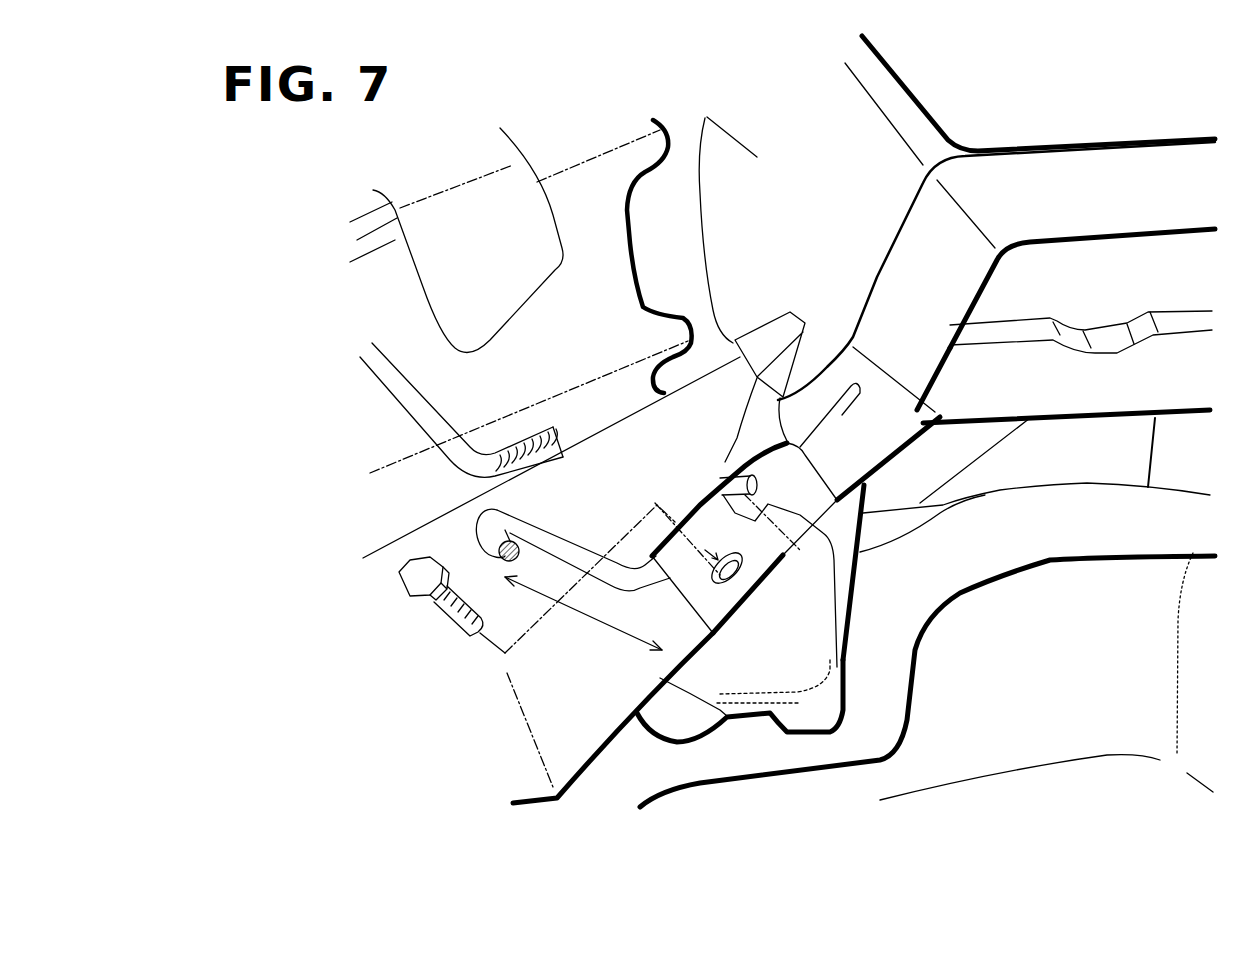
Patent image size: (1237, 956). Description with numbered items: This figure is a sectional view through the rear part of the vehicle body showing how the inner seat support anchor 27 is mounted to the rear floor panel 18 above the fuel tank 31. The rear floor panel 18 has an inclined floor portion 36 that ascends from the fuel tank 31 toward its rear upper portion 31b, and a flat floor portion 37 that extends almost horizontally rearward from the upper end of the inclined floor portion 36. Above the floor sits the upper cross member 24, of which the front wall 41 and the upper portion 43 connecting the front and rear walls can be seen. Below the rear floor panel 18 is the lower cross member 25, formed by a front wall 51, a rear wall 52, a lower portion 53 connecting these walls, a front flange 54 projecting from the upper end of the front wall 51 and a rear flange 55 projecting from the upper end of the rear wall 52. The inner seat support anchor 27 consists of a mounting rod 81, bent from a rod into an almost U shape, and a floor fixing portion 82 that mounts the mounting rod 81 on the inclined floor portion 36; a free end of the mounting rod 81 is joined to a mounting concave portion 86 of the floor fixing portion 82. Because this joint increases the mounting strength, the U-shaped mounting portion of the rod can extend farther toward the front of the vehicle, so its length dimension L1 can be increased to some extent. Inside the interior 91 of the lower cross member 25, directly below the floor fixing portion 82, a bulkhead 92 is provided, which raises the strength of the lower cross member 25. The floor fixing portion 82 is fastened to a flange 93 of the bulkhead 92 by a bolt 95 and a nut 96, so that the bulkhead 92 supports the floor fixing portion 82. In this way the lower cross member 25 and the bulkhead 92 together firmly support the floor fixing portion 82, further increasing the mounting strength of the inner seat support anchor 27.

The rear floor panel 18 is at (517, 765).
The upper cross member 24 is at (1112, 182).
The lower cross member 25 is at (868, 532).
The inner seat support anchor 27 is at (581, 488).
The fuel tank 31 is at (1143, 520).
The rear upper portion 31b is at (1063, 503).
The inclined floor portion 36 is at (540, 718).
The flat floor portion 37 is at (1067, 357).
The front wall 41 is at (917, 250).
The upper portion 43 is at (1027, 195).
The front wall 51 is at (680, 692).
The rear wall 52 is at (873, 566).
The lower portion 53 is at (817, 705).
The front flange 54 is at (610, 753).
The rear flange 55 is at (898, 467).
The mounting rod 81 is at (565, 543).
The floor fixing portion 82 is at (737, 445).
The mounting concave portion 86 is at (778, 467).
The interior 91 is at (781, 651).
The bulkhead 92 is at (747, 687).
The flange 93 is at (778, 530).
The bolt 95 is at (435, 617).
The nut 96 is at (700, 590).
The length dimension L1 is at (578, 613).